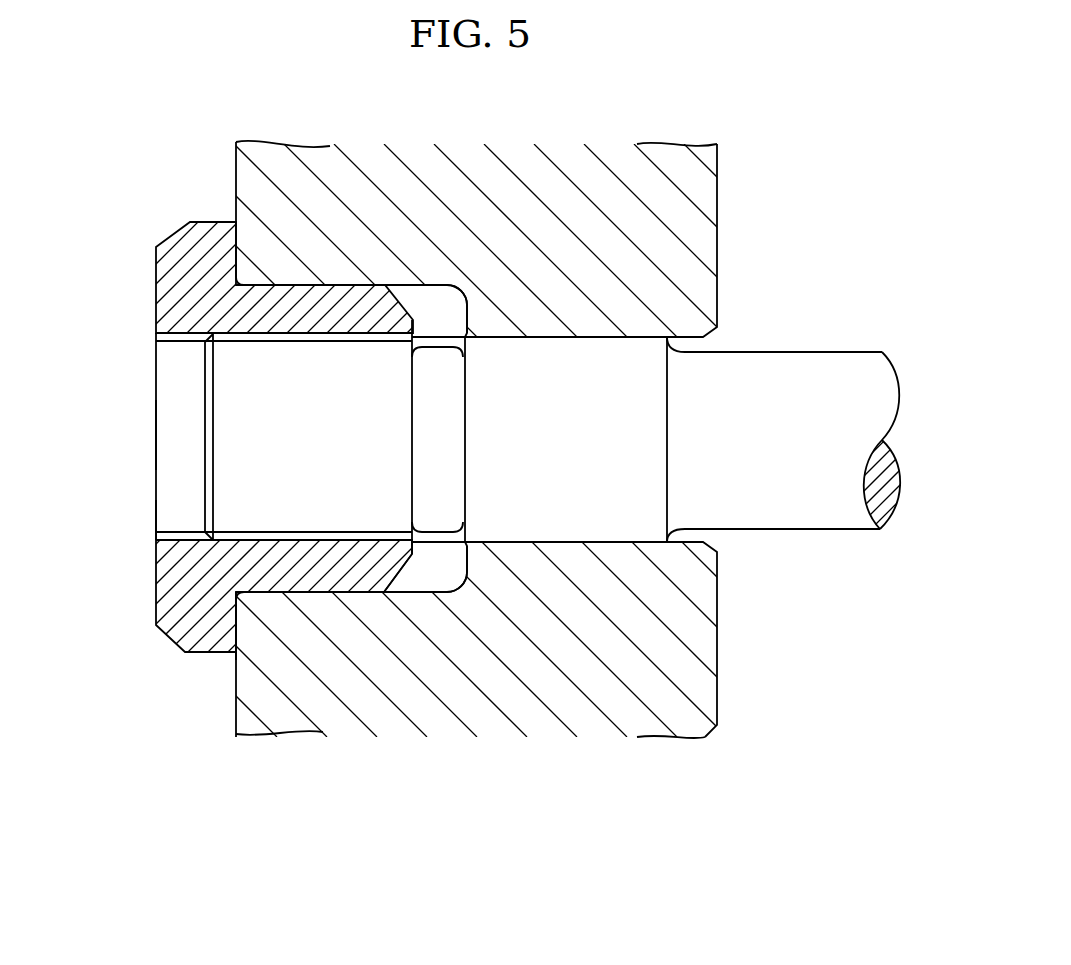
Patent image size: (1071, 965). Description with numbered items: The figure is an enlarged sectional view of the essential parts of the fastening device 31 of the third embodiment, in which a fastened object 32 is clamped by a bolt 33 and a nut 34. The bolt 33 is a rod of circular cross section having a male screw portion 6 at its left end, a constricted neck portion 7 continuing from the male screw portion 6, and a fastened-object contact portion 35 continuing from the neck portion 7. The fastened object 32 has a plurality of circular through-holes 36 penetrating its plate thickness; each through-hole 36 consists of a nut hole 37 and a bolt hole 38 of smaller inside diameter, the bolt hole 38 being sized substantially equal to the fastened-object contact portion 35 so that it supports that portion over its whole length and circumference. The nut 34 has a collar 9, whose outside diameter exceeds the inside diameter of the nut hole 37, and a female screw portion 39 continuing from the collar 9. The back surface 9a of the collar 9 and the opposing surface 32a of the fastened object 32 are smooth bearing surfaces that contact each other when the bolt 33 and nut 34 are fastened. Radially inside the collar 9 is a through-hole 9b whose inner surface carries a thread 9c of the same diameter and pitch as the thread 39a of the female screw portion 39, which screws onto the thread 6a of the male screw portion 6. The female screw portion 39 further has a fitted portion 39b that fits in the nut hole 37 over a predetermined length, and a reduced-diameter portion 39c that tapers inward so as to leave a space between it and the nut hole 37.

The male screw portion 6 is at (233, 427).
The thread 6a is at (358, 338).
The neck portion 7 is at (428, 488).
The collar 9 is at (172, 643).
The back surface 9a is at (245, 650).
The through-hole 9b is at (176, 447).
The thread 9c is at (176, 527).
The fastening device 31 is at (96, 204).
The fastened object 32 is at (250, 193).
The surface 32a is at (233, 605).
The bolt 33 is at (203, 390).
The nut 34 is at (190, 288).
The fastened-object contact portion 35 is at (658, 447).
The through-hole 36 is at (595, 418).
The nut hole 37 is at (425, 286).
The bolt hole 38 is at (583, 337).
The female screw portion 39 is at (463, 777).
The thread 39a is at (290, 534).
The fitted portion 39b is at (317, 583).
The reduced-diameter portion 39c is at (388, 568).